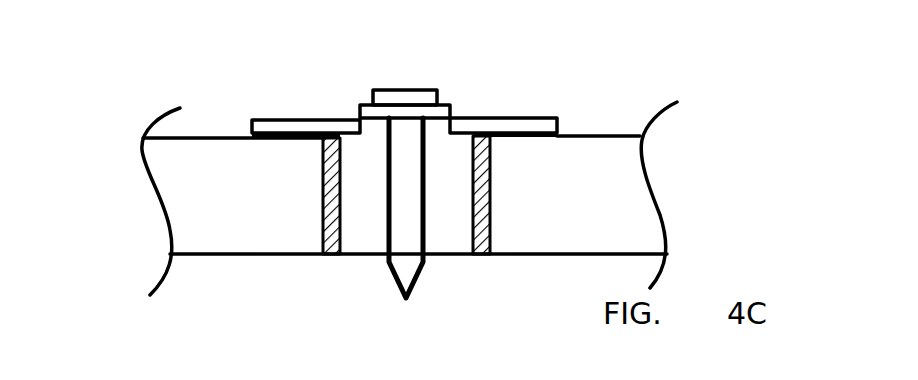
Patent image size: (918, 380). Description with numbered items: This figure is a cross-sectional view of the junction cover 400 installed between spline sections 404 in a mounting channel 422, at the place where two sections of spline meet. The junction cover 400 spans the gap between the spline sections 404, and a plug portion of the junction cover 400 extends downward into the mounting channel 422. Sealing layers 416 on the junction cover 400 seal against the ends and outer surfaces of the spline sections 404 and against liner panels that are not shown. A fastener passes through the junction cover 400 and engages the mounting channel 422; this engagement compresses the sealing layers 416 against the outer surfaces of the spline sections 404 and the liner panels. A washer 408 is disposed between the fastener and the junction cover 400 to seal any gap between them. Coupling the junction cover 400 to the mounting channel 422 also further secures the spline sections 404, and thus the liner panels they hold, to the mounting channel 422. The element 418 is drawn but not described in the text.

The junction cover 400 is at (330, 104).
The spline sections 404 is at (208, 155).
The washer 408 is at (450, 107).
The sealing layers 416 is at (267, 140).
The pad 418 is at (423, 177).
The mounting channel 422 is at (575, 254).